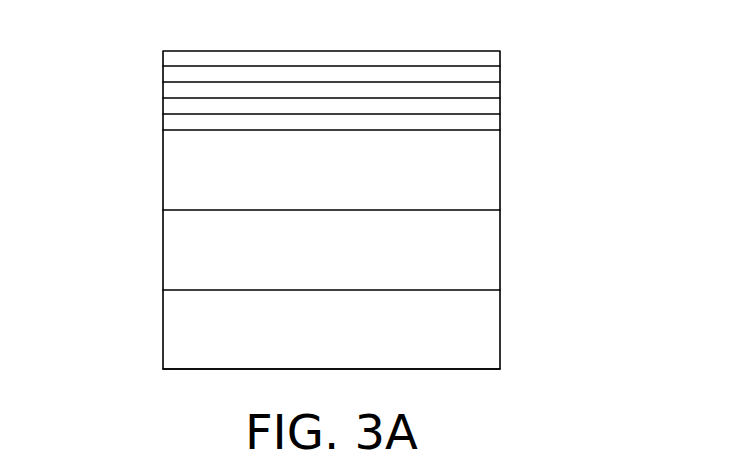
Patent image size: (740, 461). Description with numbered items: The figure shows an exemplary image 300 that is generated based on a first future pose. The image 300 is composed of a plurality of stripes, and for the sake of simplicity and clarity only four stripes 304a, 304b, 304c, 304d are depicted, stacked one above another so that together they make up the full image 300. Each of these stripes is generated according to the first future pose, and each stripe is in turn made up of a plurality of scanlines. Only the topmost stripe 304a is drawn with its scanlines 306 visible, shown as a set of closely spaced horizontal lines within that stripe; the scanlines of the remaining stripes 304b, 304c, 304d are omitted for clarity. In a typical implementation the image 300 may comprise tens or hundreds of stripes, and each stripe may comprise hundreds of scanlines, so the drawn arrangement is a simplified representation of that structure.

The image 300 is at (598, 47).
The stripe 304a is at (505, 51).
The stripe 304b is at (158, 132).
The stripe 304c is at (505, 211).
The stripe 304d is at (158, 291).
The scanlines 306 is at (293, 89).